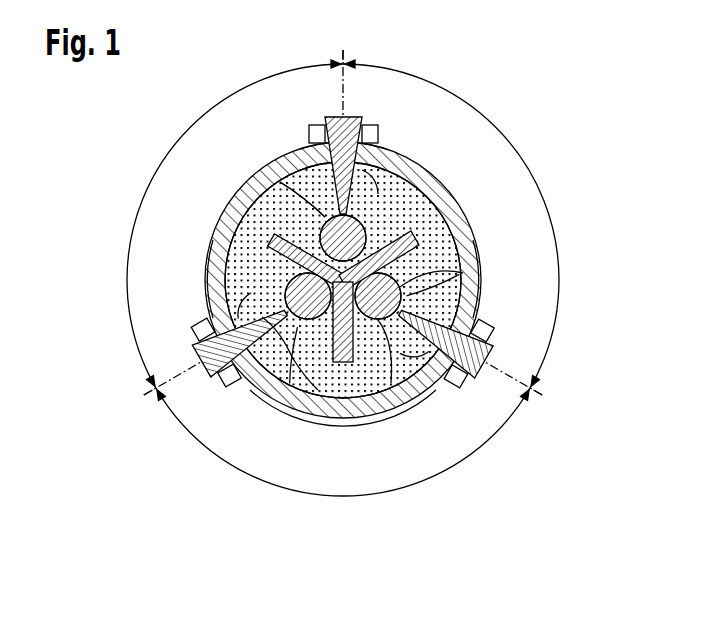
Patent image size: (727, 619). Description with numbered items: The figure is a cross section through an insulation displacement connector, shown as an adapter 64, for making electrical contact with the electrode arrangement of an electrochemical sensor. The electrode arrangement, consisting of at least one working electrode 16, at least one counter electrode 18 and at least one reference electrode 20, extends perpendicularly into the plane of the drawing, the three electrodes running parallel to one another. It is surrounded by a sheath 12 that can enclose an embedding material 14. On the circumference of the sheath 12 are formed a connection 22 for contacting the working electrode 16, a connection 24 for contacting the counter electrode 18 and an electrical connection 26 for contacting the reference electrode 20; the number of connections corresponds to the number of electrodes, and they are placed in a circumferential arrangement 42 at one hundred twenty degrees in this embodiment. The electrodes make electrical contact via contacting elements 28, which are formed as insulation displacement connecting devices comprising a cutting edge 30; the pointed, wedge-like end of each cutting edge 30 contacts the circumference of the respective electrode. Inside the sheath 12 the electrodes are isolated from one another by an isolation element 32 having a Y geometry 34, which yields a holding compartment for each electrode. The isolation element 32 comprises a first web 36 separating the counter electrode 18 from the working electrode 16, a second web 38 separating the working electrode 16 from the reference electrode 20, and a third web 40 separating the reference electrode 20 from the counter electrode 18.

The sheath 12 is at (421, 280).
The adapter 64 is at (479, 228).
The embedding material 14 is at (245, 200).
The working electrode 16 is at (282, 181).
The counter electrode 18 is at (280, 388).
The reference electrode 20 is at (457, 273).
The connection 22 is at (369, 126).
The connection 24 is at (188, 344).
The electrical connection 26 is at (463, 373).
The contacting element 28 is at (331, 116).
The cutting edge 30 is at (386, 160).
The isolation element 32 is at (391, 383).
The Y geometry 34 is at (318, 391).
The first web 36 is at (271, 239).
The second web 38 is at (437, 211).
The third web 40 is at (350, 366).
The circumferential arrangement 42 is at (146, 172).